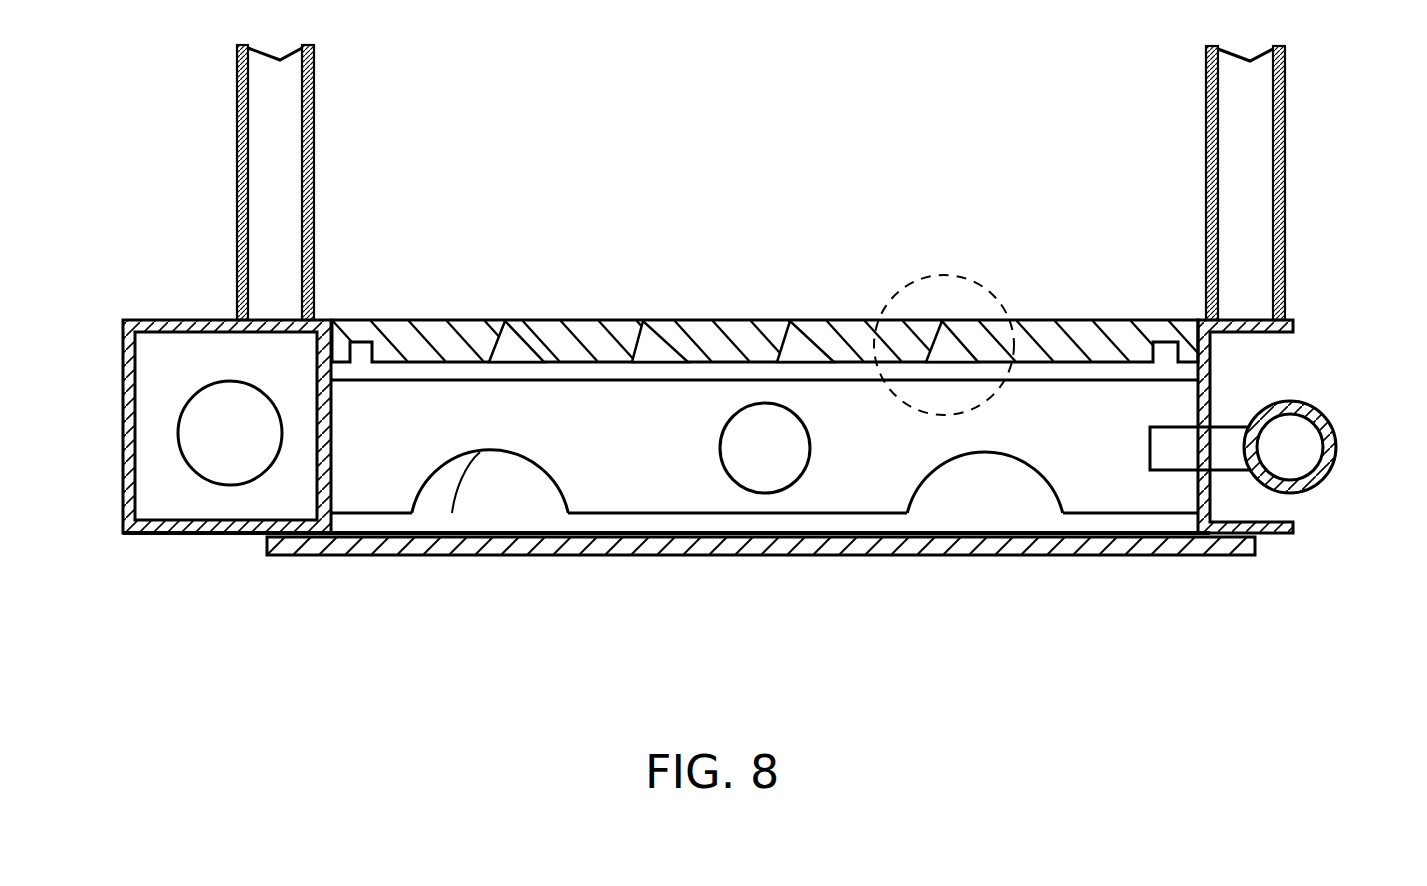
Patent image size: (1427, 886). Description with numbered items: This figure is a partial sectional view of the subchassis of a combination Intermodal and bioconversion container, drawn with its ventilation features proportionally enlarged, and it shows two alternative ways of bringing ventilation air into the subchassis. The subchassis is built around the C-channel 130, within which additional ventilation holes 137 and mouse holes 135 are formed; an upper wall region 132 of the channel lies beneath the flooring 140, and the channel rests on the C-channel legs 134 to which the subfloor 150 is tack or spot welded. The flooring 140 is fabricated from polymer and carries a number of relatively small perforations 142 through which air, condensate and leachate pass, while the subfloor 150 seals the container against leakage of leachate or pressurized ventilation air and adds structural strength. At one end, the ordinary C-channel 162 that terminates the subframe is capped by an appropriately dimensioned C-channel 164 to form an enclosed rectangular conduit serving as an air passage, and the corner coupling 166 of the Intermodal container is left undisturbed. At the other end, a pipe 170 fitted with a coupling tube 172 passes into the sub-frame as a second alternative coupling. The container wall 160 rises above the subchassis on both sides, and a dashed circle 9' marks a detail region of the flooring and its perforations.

The wall 160 is at (322, 137).
The C-channel 164 is at (205, 429).
The coupling 166 is at (160, 505).
The C-channel 162 is at (1293, 528).
The flooring 140 is at (765, 312).
The perforation 142 is at (510, 333).
The ventilation hole 137 is at (765, 403).
The detail region 9' is at (956, 330).
The upper channel wall 132 is at (448, 376).
The C-channel 130 is at (666, 426).
The C-channel leg 134 is at (649, 512).
The mouse hole 135 is at (452, 513).
The coupling tube 172 is at (1222, 445).
The pipe 170 is at (1328, 418).
The subfloor 150 is at (761, 588).